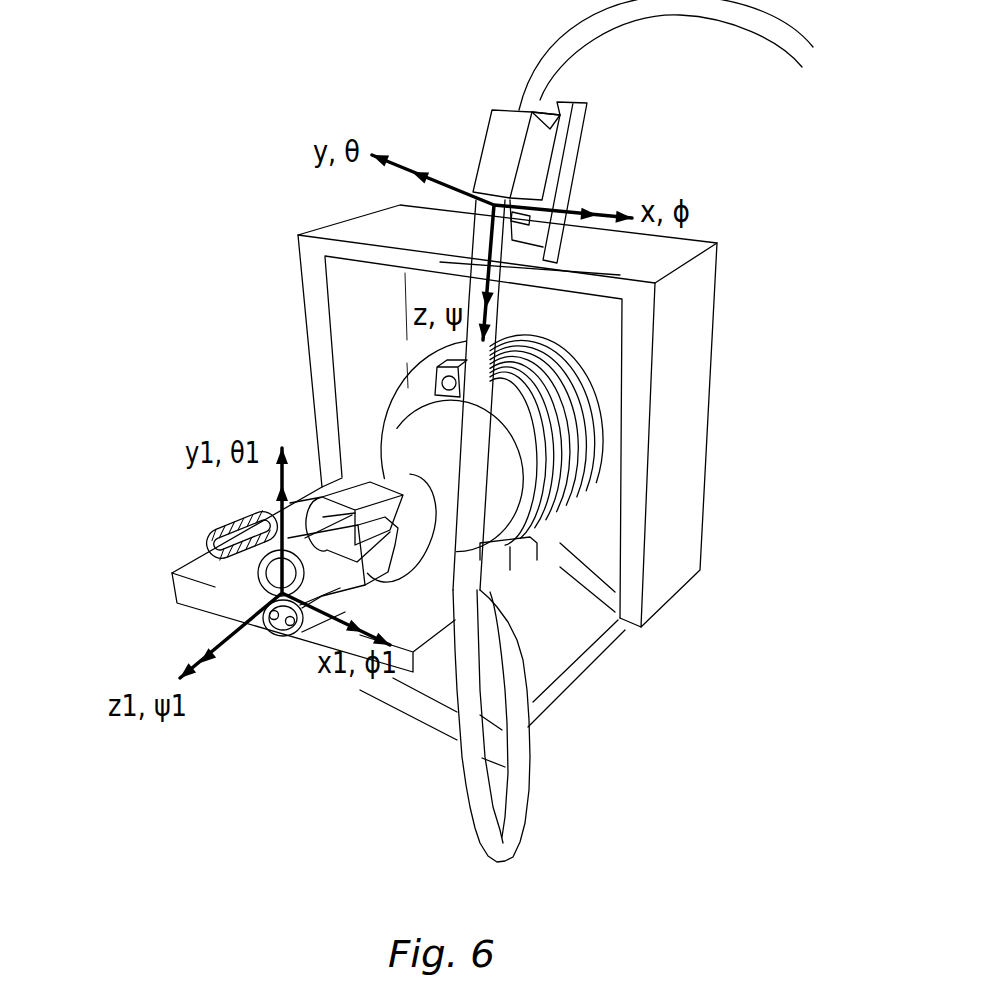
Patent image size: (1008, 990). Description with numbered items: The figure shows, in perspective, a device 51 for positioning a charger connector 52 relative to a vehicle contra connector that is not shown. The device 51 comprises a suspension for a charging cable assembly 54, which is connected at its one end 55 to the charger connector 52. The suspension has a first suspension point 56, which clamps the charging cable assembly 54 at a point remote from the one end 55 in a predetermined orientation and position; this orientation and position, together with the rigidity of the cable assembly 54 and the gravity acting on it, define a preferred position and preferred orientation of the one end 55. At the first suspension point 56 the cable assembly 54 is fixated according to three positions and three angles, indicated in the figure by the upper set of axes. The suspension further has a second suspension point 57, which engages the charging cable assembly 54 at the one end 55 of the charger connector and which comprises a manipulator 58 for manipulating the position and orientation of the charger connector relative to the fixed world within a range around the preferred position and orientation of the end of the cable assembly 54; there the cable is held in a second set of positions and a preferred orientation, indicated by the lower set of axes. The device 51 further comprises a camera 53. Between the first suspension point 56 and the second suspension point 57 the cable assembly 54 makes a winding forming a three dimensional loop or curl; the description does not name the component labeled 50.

The charging cable 50 is at (533, 817).
The device 51 is at (255, 108).
The charger connector 52 is at (273, 642).
The camera 53 is at (430, 360).
The charging cable assembly 54 is at (507, 303).
The one end 55 is at (443, 573).
The first suspension point 56 is at (485, 120).
The second suspension point 57 is at (345, 470).
The manipulator 58 is at (567, 518).